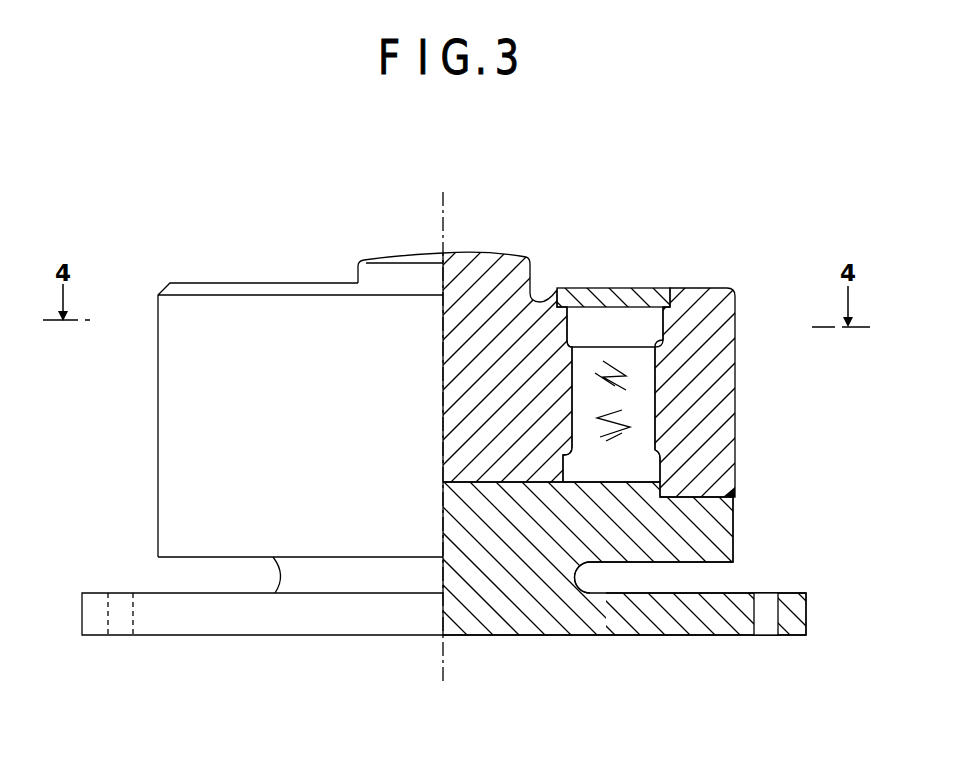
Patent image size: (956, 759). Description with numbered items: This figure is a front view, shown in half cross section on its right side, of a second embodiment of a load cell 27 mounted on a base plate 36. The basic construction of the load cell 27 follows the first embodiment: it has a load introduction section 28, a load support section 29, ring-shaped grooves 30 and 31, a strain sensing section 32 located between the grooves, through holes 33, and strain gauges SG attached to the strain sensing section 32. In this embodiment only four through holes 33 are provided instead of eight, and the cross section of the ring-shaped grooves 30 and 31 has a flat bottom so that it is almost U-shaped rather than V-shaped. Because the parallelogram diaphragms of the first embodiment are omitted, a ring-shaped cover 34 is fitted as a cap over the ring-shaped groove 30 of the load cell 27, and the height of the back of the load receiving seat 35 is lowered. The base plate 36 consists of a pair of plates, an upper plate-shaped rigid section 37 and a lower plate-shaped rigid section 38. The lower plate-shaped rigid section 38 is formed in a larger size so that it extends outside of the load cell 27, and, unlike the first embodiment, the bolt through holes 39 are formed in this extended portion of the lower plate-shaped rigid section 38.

The load cell 27 is at (148, 404).
The load introduction section 28 is at (500, 433).
The load support section 29 is at (725, 406).
The ring-shaped groove 30 is at (617, 317).
The ring-shaped groove 31 is at (600, 470).
The strain sensing section 32 is at (650, 371).
The through holes 33 is at (633, 445).
The ring-shaped cover 34 is at (588, 288).
The load receiving seat 35 is at (486, 265).
The base plate 36 is at (162, 570).
The upper plate-shaped rigid section 37 is at (706, 563).
The lower plate-shaped rigid section 38 is at (807, 622).
The bolt through holes 39 is at (763, 620).
The strain gauges SG is at (630, 428).